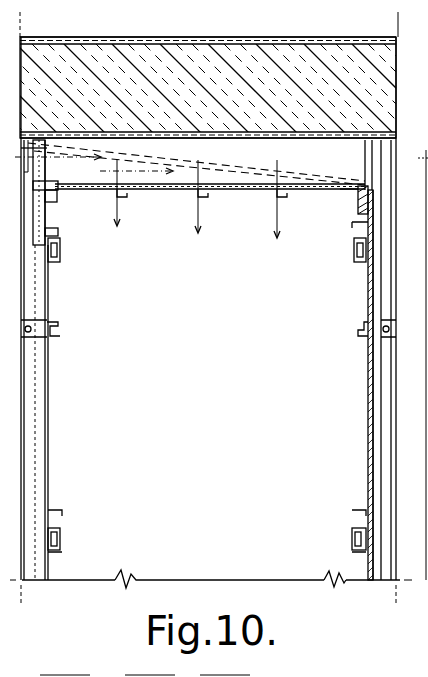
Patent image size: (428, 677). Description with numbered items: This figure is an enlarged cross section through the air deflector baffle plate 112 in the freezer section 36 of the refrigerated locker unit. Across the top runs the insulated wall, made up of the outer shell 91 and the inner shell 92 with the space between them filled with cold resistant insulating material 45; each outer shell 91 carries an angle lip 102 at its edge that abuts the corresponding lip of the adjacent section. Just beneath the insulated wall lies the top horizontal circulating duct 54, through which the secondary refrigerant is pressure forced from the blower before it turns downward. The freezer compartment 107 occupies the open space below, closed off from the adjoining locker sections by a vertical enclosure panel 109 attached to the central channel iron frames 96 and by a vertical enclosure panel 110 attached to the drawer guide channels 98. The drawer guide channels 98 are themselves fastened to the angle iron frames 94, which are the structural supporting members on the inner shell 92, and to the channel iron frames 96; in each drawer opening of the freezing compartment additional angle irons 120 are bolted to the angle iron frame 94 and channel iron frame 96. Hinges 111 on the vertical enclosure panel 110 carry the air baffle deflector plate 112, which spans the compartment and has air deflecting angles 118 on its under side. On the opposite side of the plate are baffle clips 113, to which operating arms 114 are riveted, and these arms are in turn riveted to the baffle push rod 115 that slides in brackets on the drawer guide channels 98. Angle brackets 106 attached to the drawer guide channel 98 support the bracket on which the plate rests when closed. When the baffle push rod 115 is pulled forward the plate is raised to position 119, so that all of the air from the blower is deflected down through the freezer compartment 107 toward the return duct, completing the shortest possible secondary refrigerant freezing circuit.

The freezer section 36 is at (163, 58).
The outer shell 91 is at (108, 47).
The cold resistant insulating material 45 is at (300, 47).
The angle lip 102 is at (22, 40).
The inner shell 92 is at (326, 140).
The top horizontal circulating duct 54 is at (338, 162).
The baffle clips 113 is at (55, 183).
The air baffle deflector plate 112 is at (160, 190).
The air deflecting angles 118 is at (122, 196).
The raised position of baffle plate 119 is at (196, 162).
The operating arms 114 is at (50, 213).
The angle brackets 106 is at (58, 236).
The hinges 111 is at (362, 195).
The drawer guide channels 98 is at (62, 252).
The baffle push rod 115 is at (46, 291).
The vertical enclosure panel 109 is at (234, 292).
The freezer compartment 107 is at (214, 393).
The vertical enclosure panel 110 is at (368, 297).
The angle irons 120 is at (60, 333).
The channel iron frames 96 is at (381, 441).
The angle iron frames 94 is at (372, 466).